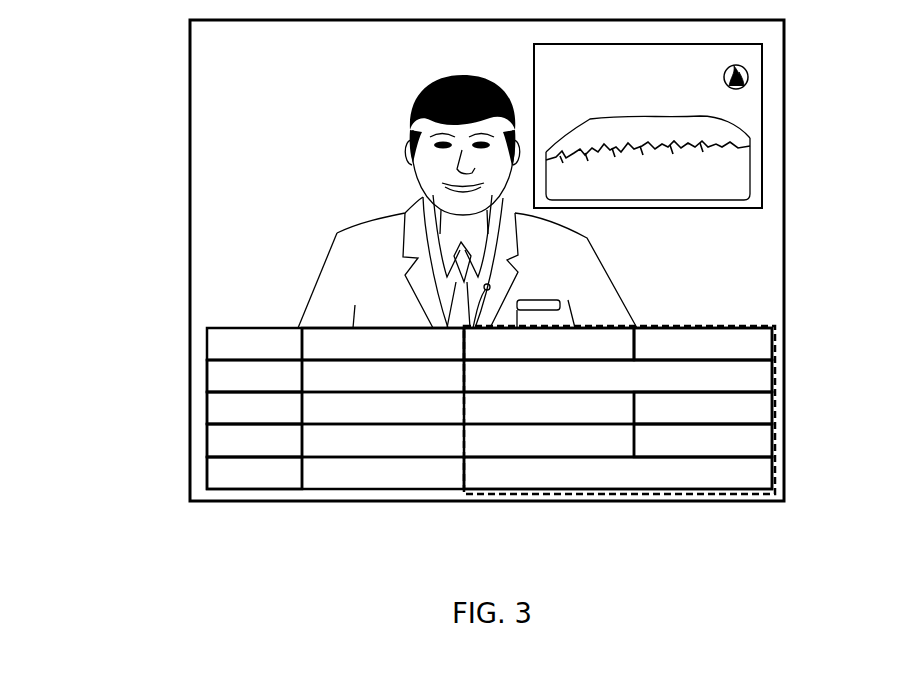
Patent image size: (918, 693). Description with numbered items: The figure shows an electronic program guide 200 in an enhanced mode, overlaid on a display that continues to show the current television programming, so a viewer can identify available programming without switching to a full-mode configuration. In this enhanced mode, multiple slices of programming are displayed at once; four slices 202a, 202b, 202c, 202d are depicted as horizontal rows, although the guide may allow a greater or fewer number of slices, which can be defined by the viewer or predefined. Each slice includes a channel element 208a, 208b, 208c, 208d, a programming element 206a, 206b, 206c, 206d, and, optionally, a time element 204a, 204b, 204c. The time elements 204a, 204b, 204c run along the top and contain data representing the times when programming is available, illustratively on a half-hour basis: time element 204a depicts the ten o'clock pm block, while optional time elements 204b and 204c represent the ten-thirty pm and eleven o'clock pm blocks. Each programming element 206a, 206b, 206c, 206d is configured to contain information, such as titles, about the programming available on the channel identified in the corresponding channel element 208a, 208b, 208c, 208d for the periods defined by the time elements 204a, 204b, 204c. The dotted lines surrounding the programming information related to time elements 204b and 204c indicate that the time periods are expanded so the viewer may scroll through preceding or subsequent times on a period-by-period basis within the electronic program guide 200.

The electronic program guide 200 is at (243, 312).
The slice 202a is at (163, 378).
The slice 202b is at (163, 412).
The slice 202c is at (163, 445).
The slice 202d is at (163, 478).
The time element 204a is at (313, 348).
The time element 204b is at (520, 340).
The time element 204c is at (692, 340).
The programming element 206a is at (770, 373).
The programming element 206b is at (760, 410).
The programming element 206c is at (767, 438).
The programming element 206d is at (765, 477).
The channel element 208a is at (213, 368).
The channel element 208b is at (277, 410).
The channel element 208c is at (277, 443).
The channel element 208d is at (217, 480).